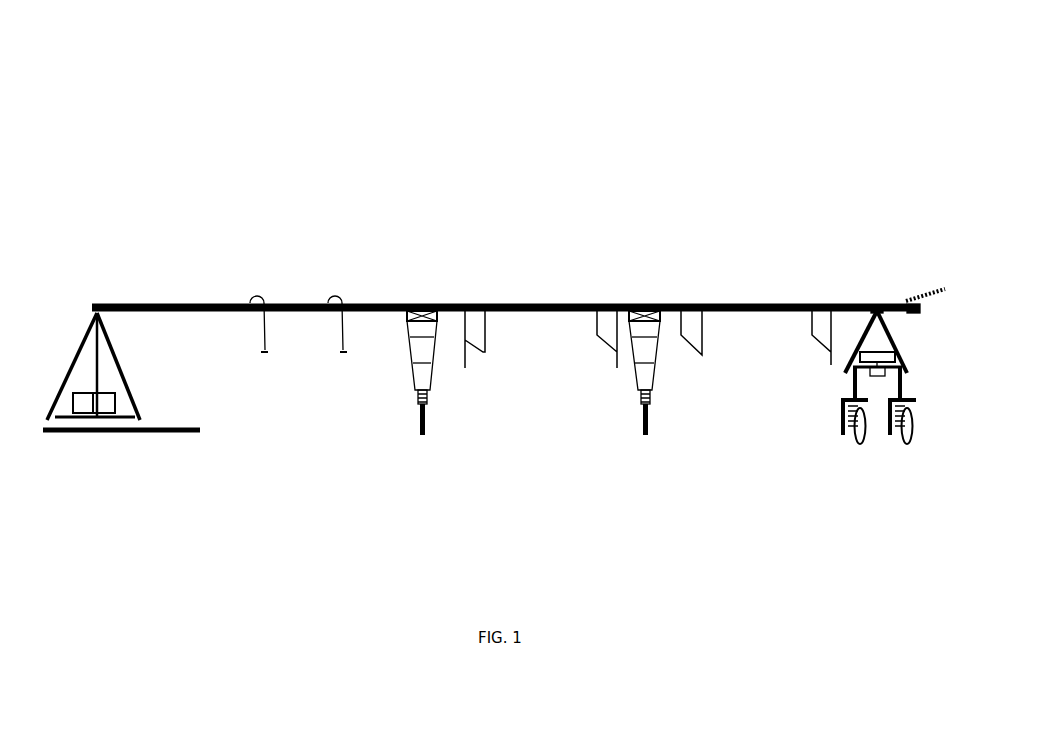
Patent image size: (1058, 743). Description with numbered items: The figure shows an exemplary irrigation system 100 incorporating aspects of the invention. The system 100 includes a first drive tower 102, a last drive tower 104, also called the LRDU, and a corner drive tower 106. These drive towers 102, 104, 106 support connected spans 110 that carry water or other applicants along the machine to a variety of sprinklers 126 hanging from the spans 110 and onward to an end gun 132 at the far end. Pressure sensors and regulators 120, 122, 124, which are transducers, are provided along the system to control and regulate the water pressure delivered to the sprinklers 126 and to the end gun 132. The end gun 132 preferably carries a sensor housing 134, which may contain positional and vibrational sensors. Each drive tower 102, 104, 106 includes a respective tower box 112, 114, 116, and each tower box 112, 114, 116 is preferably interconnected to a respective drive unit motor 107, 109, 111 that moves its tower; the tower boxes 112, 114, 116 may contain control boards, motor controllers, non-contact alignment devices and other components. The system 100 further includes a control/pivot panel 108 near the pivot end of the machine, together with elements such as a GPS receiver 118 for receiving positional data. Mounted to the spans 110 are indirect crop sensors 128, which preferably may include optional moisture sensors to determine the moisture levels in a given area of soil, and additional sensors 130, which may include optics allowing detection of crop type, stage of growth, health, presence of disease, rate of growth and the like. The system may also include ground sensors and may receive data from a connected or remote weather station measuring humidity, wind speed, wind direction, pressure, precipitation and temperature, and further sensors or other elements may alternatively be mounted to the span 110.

The irrigation system 100 is at (526, 44).
The first drive tower 102 is at (407, 360).
The last drive tower 104 is at (630, 372).
The corner drive tower 106 is at (847, 378).
The drive unit motor 107 is at (427, 397).
The control/pivot panel 108 is at (113, 392).
The drive unit motor 109 is at (650, 397).
The spans 110 is at (292, 304).
The drive unit motor 111 is at (841, 436).
The tower box 112 is at (440, 306).
The tower box 114 is at (660, 313).
The tower box 116 is at (863, 313).
The GPS receiver 118 is at (880, 382).
The pressure sensor and regulator 120 is at (93, 313).
The pressure sensor and regulator 122 is at (640, 304).
The pressure sensor and regulator 124 is at (880, 310).
The sprinklers 126 is at (344, 352).
The indirect crop sensors 128 is at (490, 320).
The additional sensors 130 is at (813, 320).
The end gun 132 is at (937, 290).
The sensor housing 134 is at (920, 312).